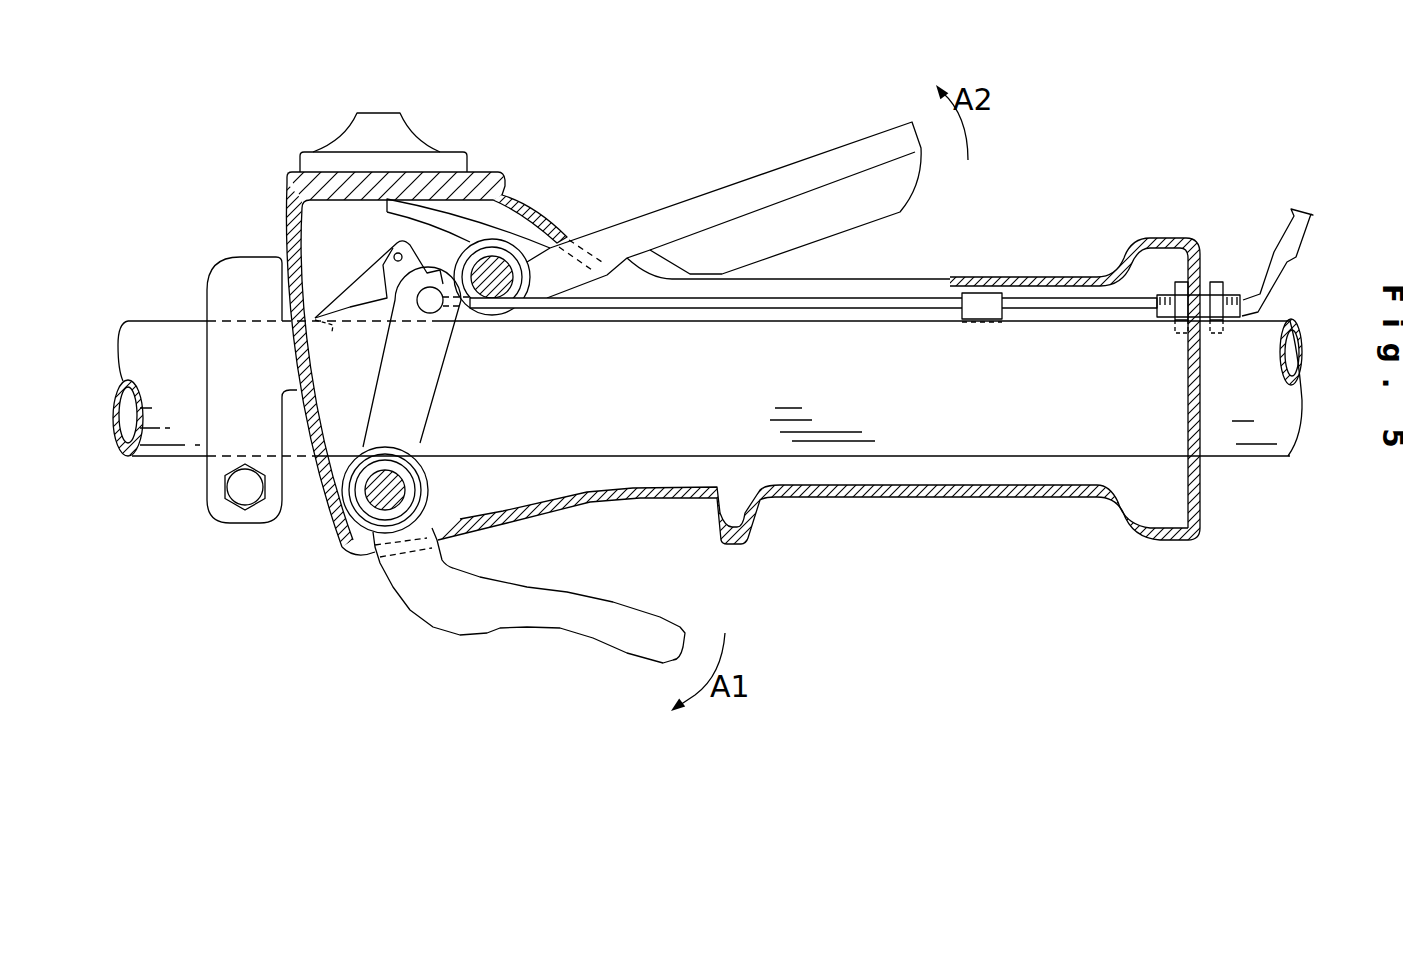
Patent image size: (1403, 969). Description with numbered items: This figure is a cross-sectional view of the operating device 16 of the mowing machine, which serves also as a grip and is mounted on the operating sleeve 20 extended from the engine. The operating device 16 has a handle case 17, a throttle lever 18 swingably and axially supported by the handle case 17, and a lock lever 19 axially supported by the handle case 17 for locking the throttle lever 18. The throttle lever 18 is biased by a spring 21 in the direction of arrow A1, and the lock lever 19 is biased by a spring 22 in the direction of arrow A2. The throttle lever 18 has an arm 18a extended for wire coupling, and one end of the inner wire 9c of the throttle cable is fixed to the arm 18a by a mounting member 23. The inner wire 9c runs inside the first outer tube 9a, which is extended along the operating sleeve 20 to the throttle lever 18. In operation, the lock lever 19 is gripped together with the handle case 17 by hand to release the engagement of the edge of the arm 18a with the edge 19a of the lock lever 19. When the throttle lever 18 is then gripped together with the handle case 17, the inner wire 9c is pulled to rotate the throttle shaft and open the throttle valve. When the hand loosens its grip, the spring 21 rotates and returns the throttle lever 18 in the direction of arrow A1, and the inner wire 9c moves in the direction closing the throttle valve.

The operating sleeve 20 is at (150, 333).
The operating device 16 is at (1055, 268).
The handle case 17 is at (835, 497).
The throttle lever 18 is at (398, 615).
The arm 18a is at (445, 380).
The lock lever 19 is at (710, 184).
The edge 19a is at (348, 302).
The spring 21 is at (428, 490).
The spring 22 is at (478, 212).
The mounting member 23 is at (436, 310).
The first outer tube 9a is at (1147, 285).
The inner wire 9c is at (865, 307).